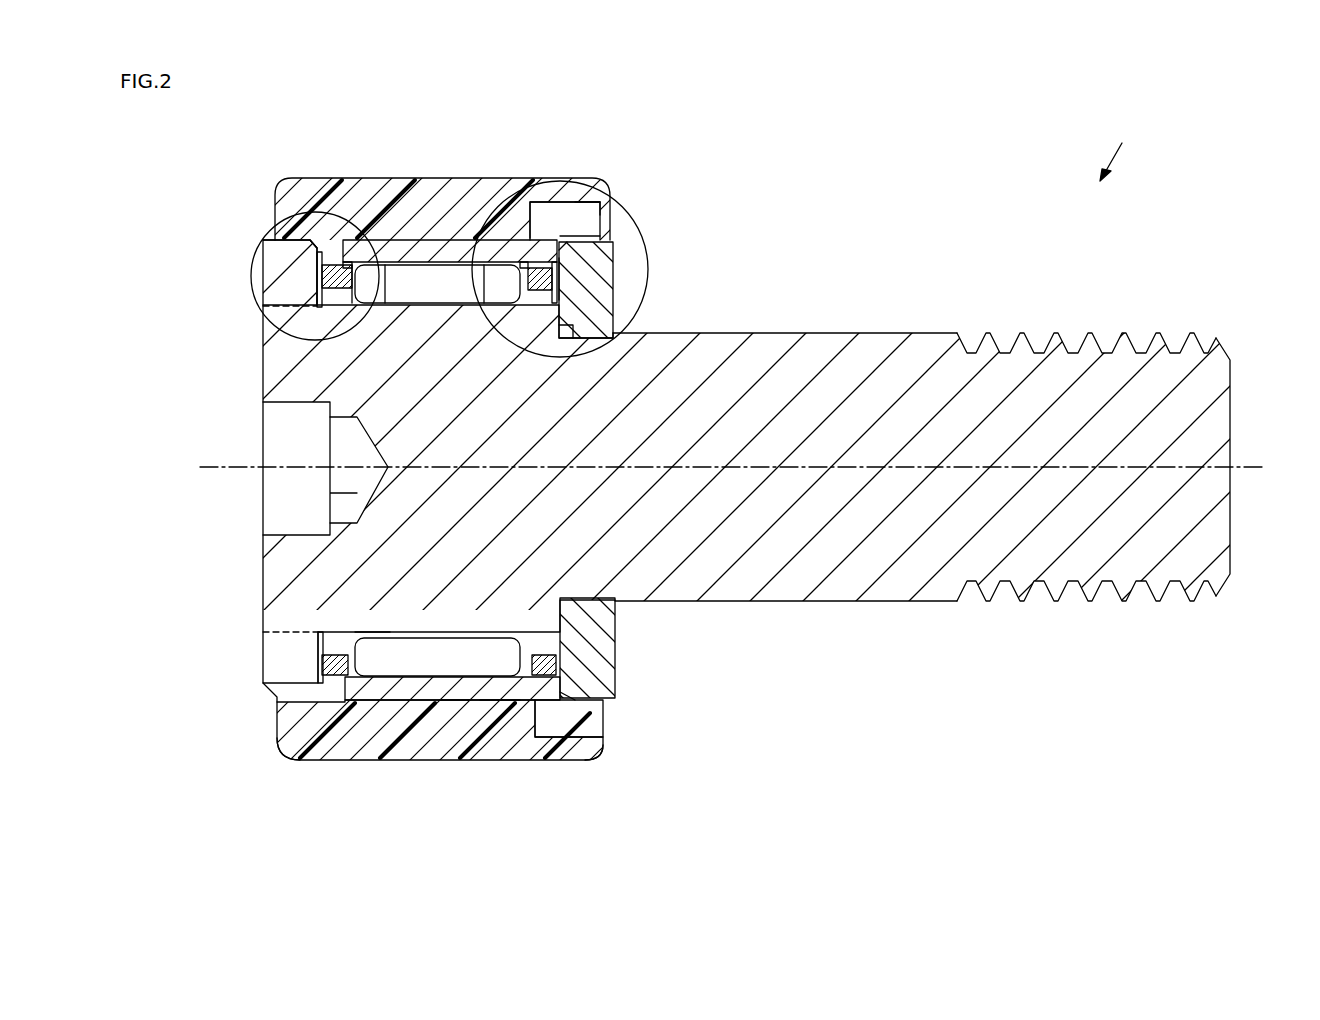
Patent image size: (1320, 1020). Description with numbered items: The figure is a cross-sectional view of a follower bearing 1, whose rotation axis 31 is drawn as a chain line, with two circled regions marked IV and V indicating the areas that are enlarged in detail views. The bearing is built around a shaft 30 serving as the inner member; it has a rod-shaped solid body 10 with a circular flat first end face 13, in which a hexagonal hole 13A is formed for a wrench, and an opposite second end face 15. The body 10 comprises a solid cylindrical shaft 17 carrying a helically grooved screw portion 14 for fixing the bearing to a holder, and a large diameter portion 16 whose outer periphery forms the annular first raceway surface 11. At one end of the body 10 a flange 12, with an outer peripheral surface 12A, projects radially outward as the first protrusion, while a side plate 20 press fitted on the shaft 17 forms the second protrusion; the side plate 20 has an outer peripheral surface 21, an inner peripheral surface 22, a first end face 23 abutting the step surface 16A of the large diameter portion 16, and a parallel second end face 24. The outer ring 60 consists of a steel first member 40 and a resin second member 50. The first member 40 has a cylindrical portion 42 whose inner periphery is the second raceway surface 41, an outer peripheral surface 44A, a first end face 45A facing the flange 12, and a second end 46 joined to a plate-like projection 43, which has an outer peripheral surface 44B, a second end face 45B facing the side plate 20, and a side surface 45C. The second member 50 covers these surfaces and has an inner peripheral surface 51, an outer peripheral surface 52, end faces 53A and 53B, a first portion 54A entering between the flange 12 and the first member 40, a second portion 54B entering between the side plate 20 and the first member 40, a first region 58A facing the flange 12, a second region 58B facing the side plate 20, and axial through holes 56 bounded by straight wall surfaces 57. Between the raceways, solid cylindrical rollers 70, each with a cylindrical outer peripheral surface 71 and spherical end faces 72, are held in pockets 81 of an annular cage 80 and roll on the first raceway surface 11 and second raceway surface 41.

The follower bearing 1 is at (1112, 139).
The body 10 is at (736, 345).
The first raceway surface 11 is at (495, 702).
The flange 12 is at (262, 275).
The outer peripheral surface of the flange 12A is at (300, 240).
The first end face 13 is at (262, 392).
The hexagonal hole 13A is at (290, 535).
The screw portion 14 is at (1096, 336).
The second end face 15 is at (1231, 505).
The large diameter portion 16 is at (370, 622).
The step surface 16A is at (566, 270).
The shaft 17 is at (831, 345).
The side plate 20 is at (592, 290).
The outer peripheral surface 21 is at (585, 248).
The inner peripheral surface 22 is at (585, 338).
The first end face 23 is at (484, 300).
The second end face 24 is at (600, 275).
The shaft 30 is at (677, 281).
The rotation axis 31 is at (1262, 466).
The first member 40 is at (410, 237).
The second raceway surface 41 is at (387, 270).
The cylindrical portion 42 is at (456, 250).
The projection 43 is at (505, 290).
The outer peripheral surface 44A is at (354, 265).
The outer peripheral surface 44B is at (530, 266).
The first end face 45A is at (346, 262).
The second end face 45B is at (545, 264).
The side surface 45C is at (522, 262).
The second end 46 is at (578, 233).
The second member 50 is at (440, 192).
The inner peripheral surface 51 is at (456, 705).
The outer peripheral surface 52 is at (330, 760).
The first end face 53A is at (277, 718).
The second end face 53B is at (603, 716).
The first portion 54A is at (300, 748).
The second portion 54B is at (590, 748).
The through holes 56 is at (602, 210).
The wall surface 57 is at (578, 214).
The first region 58A is at (300, 688).
The second region 58B is at (572, 692).
The outer ring 60 is at (460, 132).
The rollers 70 is at (400, 662).
The outer peripheral surface 71 is at (420, 690).
The end faces 72 is at (328, 664).
The cage 80 is at (325, 275).
The pockets 81 is at (322, 258).
The detail view IV is at (258, 300).
The detail view V is at (580, 188).